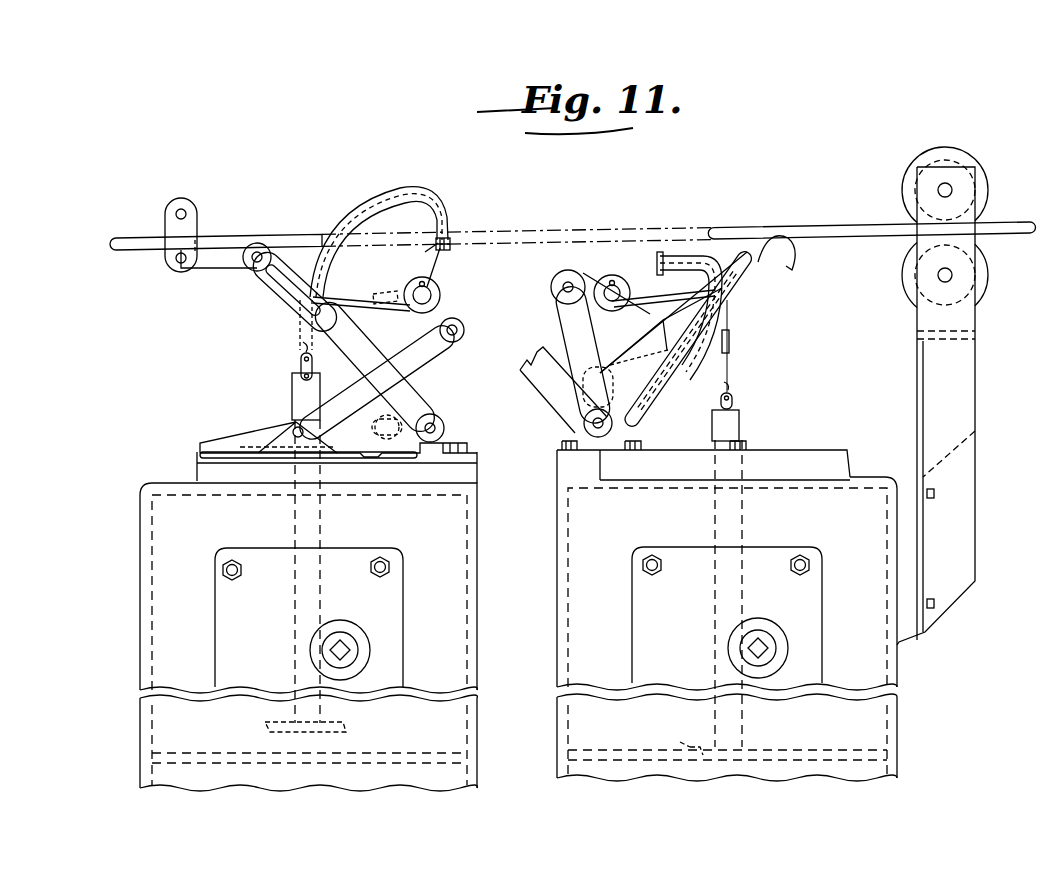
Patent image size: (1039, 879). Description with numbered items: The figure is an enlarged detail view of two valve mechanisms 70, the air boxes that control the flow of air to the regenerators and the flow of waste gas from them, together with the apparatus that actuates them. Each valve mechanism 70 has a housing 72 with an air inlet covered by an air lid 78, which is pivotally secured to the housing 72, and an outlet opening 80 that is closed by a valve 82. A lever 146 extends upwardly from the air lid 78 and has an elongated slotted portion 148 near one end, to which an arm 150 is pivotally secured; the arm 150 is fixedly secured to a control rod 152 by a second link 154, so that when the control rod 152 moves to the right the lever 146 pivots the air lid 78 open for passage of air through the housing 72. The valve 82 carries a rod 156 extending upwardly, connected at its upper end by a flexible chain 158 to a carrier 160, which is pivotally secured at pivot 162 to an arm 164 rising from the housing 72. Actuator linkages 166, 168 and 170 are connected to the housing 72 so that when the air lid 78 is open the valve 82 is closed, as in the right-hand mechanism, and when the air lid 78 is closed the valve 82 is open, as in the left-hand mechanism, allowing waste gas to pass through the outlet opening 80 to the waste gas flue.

The valve mechanism 70 is at (118, 517).
The housing 72 is at (217, 538).
The air lid 78 is at (236, 452).
The outlet opening 80 is at (345, 760).
The valve 82 is at (345, 728).
The lever 146 is at (372, 370).
The elongated slotted portion 148 is at (282, 282).
The arm 150 is at (216, 261).
The control rod 152 is at (238, 241).
The second link 154 is at (173, 222).
The rod 156 is at (320, 512).
The flexible chain 158 is at (305, 342).
The carrier 160 is at (396, 190).
The pivot 162 is at (428, 293).
The arm 164 is at (423, 341).
The actuator linkage 166 is at (425, 397).
The actuator linkage 168 is at (458, 326).
The actuator linkage 170 is at (446, 308).